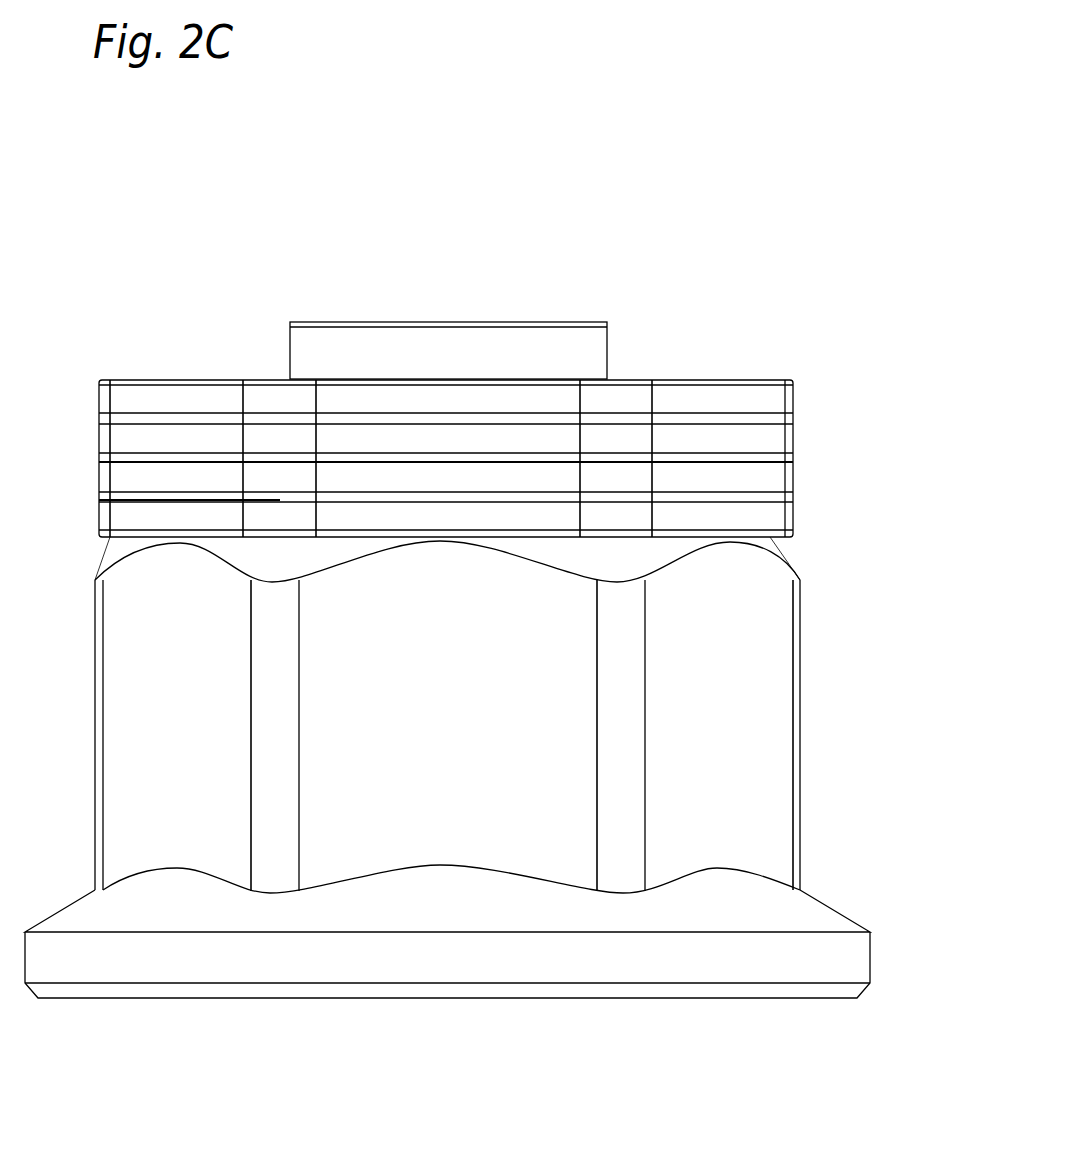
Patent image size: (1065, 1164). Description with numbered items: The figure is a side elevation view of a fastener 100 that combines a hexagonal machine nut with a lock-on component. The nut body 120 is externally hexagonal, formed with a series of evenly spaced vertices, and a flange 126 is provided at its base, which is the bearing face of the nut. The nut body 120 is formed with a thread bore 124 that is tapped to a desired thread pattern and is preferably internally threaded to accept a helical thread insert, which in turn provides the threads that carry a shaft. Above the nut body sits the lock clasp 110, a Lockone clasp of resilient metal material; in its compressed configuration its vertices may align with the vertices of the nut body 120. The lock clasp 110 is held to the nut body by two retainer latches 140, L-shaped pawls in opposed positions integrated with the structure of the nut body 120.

The fastener 100 is at (820, 121).
The lock clasp 110 is at (755, 398).
The nut body 120 is at (755, 608).
The thread bore 124 is at (452, 303).
The flange 126 is at (781, 947).
The retainer latch 140 is at (348, 349).